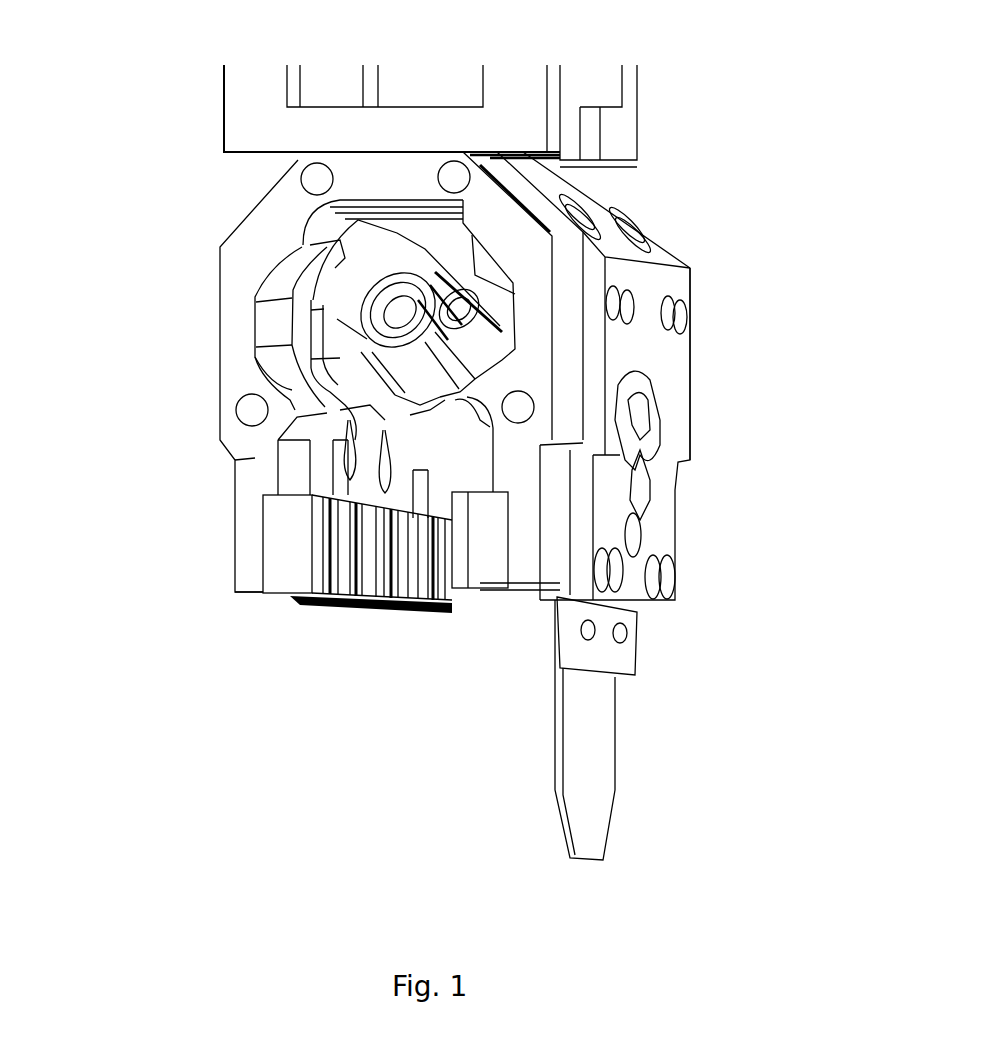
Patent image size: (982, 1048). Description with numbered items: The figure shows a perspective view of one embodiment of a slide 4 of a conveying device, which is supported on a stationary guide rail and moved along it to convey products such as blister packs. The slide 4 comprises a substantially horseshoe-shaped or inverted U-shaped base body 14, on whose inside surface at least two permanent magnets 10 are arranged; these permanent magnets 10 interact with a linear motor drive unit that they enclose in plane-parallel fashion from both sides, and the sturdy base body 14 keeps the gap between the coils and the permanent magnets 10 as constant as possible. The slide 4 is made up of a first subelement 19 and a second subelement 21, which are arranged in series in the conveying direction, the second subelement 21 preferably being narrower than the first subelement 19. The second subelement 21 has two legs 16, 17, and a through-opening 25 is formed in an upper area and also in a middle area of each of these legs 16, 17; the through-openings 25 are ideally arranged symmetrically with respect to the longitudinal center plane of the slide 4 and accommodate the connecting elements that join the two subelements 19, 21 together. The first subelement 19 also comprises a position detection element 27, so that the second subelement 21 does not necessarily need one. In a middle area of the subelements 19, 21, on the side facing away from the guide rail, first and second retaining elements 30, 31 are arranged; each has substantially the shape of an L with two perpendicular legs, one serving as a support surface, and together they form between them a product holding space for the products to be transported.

The slide 4 is at (715, 515).
The permanent magnets 10 is at (283, 595).
The base body 14 is at (184, 308).
The leg 16 is at (250, 452).
The leg 17 is at (525, 452).
The first subelement 19 is at (667, 358).
The second subelement 21 is at (248, 472).
The through-opening 25 is at (320, 182).
The position detection element 27 is at (587, 784).
The first retaining element 30 is at (617, 137).
The second retaining element 31 is at (250, 128).